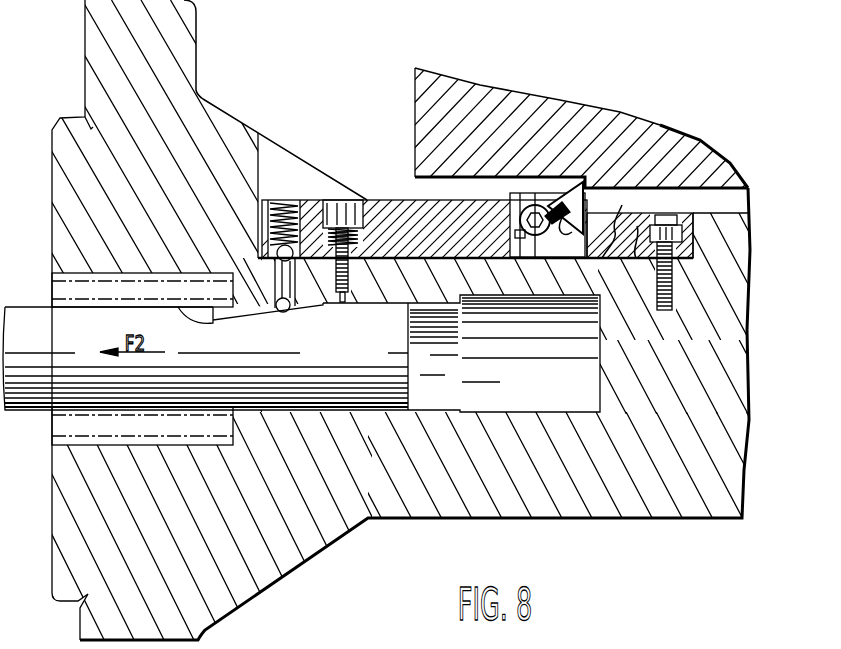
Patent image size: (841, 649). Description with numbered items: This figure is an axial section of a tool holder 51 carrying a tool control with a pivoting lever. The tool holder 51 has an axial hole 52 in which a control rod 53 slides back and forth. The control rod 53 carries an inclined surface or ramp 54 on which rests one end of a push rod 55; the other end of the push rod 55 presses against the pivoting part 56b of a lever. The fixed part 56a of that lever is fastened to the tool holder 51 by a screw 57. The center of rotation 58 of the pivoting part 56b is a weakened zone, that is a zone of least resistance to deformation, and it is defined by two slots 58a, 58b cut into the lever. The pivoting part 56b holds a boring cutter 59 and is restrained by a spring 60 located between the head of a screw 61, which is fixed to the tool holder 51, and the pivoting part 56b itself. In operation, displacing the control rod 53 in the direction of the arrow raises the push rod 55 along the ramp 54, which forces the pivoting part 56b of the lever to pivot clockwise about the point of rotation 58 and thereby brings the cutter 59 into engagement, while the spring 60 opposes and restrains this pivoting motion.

The tool holder 51 is at (100, 48).
The axial hole 52 is at (300, 410).
The control rod 53 is at (354, 355).
The inclined surface or ramp 54 is at (214, 314).
The push rod 55 is at (276, 304).
The fixed part of the lever 56a is at (693, 258).
The pivoting part of the lever 56b is at (424, 236).
The screw 57 is at (682, 233).
The center of rotation 58 is at (598, 258).
The slot 58a is at (623, 207).
The slot 58b is at (619, 258).
The boring cutter 59 is at (578, 181).
The spring 60 is at (363, 200).
The screw 61 is at (343, 200).